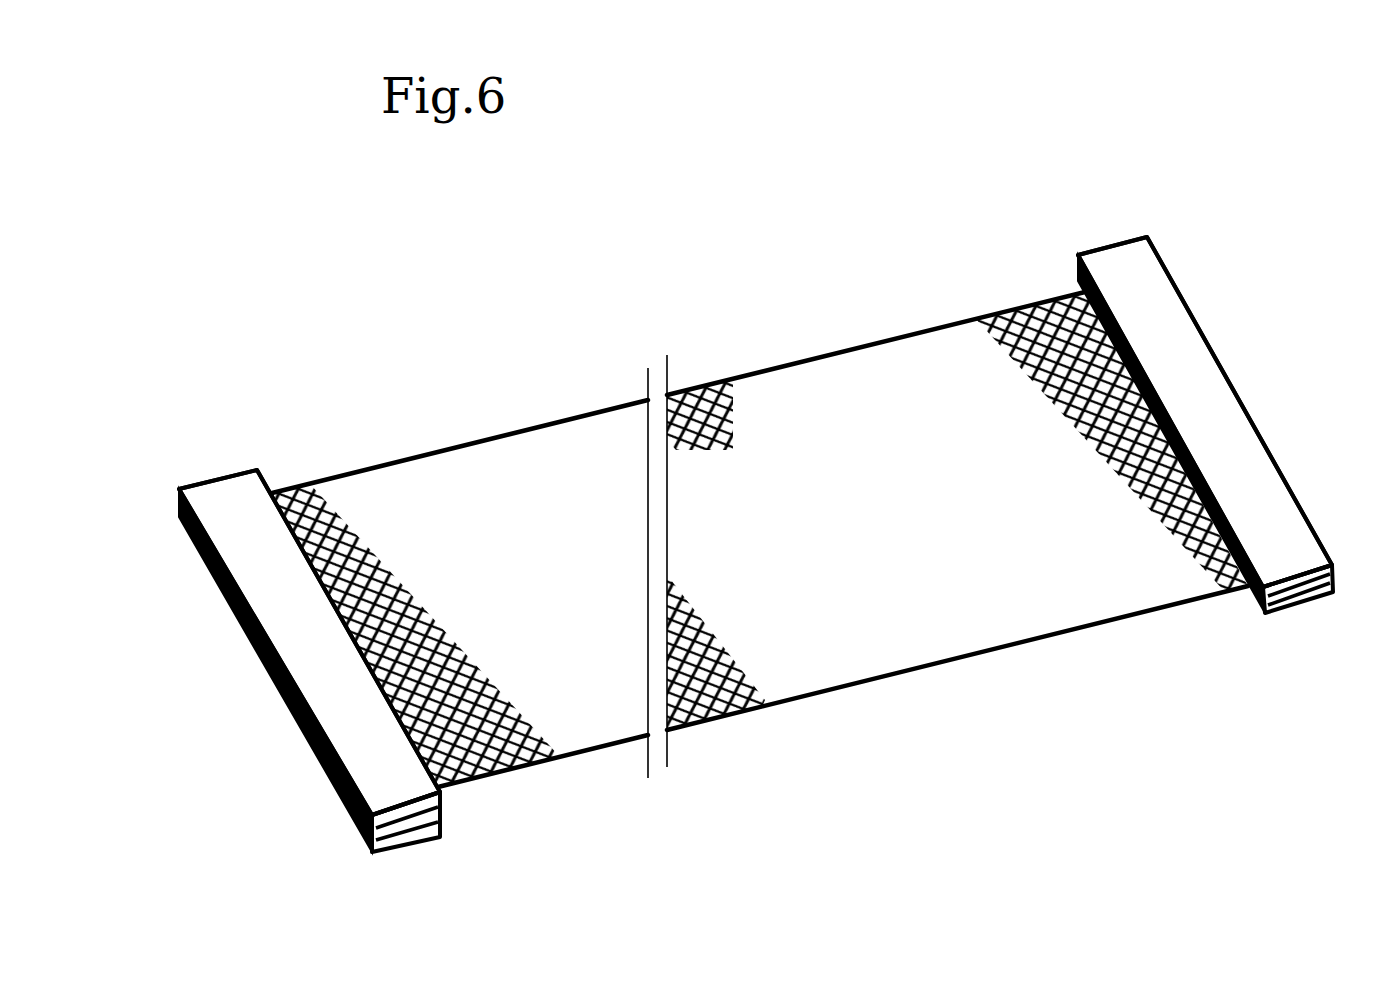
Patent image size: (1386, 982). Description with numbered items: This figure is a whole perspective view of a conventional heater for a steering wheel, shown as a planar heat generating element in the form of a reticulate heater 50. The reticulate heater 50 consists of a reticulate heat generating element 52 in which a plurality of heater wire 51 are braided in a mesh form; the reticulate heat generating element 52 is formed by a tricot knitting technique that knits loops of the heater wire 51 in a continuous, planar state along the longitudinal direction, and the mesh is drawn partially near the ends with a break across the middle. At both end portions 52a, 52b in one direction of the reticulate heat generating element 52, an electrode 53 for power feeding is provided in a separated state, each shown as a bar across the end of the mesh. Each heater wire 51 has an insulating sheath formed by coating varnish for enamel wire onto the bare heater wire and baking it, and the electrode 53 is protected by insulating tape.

The reticulate heater 50 is at (865, 182).
The heater wire 51 is at (740, 673).
The reticulate heat generating element 52 is at (742, 343).
The end portion 52a is at (213, 452).
The end portion 52b is at (1104, 223).
The electrode 53 is at (317, 670).